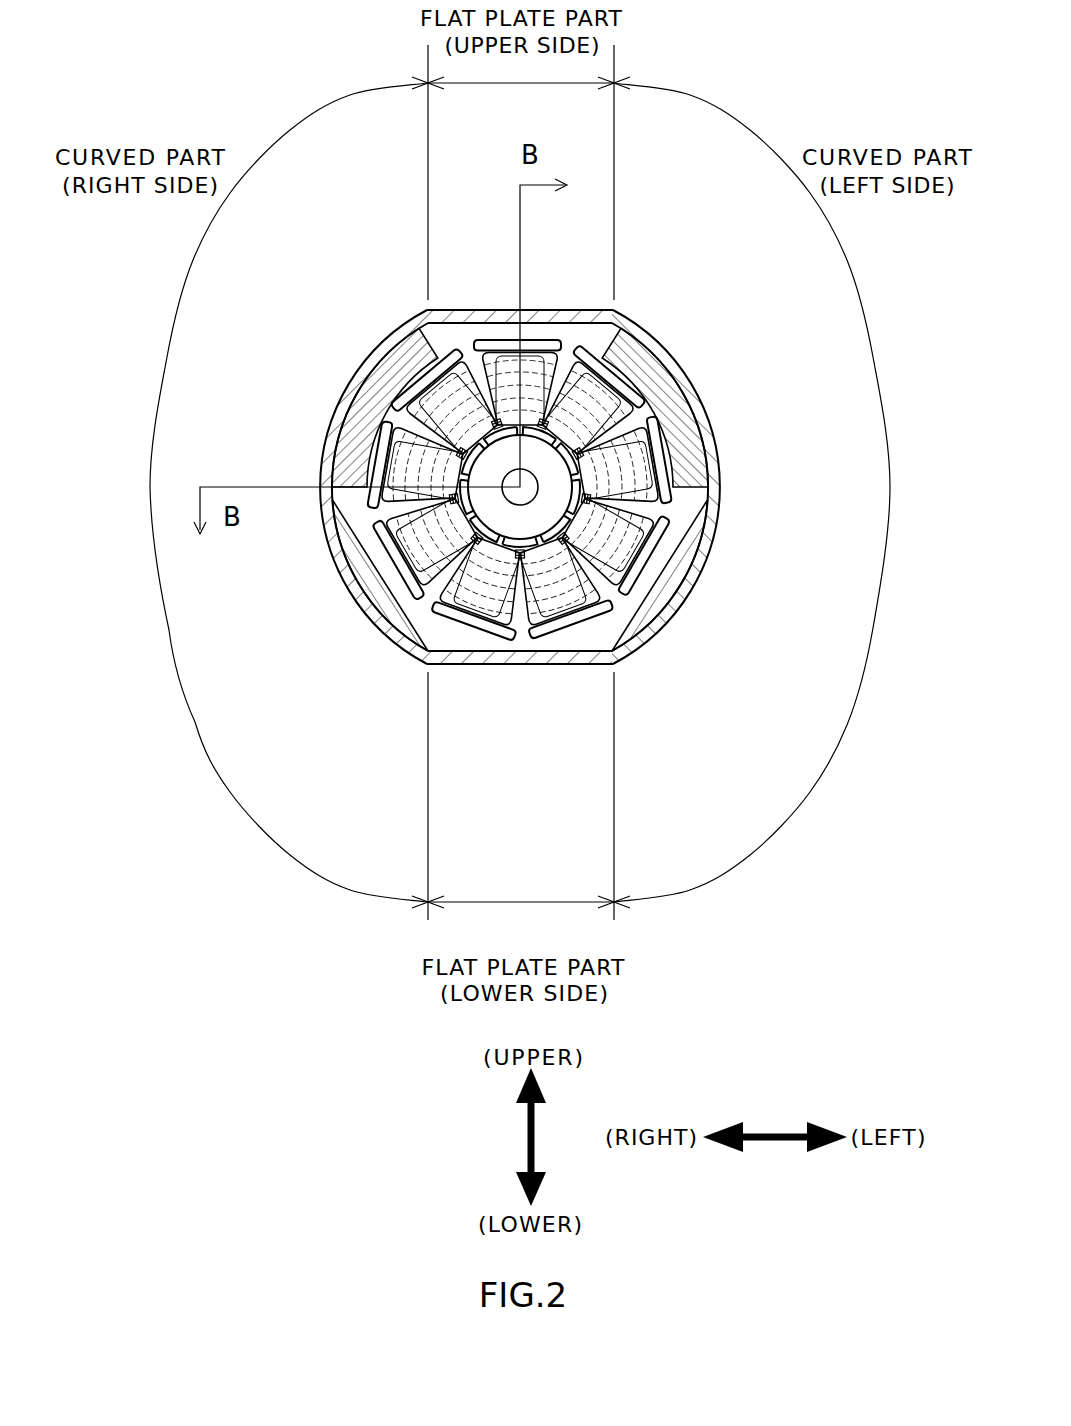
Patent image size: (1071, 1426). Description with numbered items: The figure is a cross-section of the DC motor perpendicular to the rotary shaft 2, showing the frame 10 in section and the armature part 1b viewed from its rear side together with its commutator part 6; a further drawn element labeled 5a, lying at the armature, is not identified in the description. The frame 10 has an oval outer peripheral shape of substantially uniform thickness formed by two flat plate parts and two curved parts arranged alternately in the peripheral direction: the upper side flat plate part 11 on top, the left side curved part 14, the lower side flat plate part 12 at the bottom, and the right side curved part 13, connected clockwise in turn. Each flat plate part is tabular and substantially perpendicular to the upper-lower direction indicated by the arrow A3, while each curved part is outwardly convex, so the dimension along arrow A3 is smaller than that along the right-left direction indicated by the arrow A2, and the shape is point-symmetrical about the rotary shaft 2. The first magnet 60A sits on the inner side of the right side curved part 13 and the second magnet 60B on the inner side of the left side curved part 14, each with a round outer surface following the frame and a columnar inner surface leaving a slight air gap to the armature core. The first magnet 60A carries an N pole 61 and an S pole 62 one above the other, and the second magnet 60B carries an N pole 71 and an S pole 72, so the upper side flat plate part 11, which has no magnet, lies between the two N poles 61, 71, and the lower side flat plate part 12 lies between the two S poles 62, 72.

The frame 10 is at (524, 482).
The upper side flat plate part 11 is at (505, 306).
The lower side flat plate part 12 is at (535, 660).
The right side curved part 13 is at (318, 463).
The left side curved part 14 is at (705, 553).
The armature part 1b is at (568, 352).
The rotary shaft 2 is at (525, 483).
The insulator 5a is at (475, 598).
The commutator part 6 is at (614, 592).
The first magnet 60A is at (307, 488).
The second magnet 60B is at (735, 496).
The N pole 61 is at (387, 450).
The S pole 62 is at (400, 578).
The N pole 71 is at (652, 418).
The S pole 72 is at (615, 565).
The arrow indicating right-left direction A2 is at (794, 1136).
The arrow indicating upper-lower direction A3 is at (530, 1127).